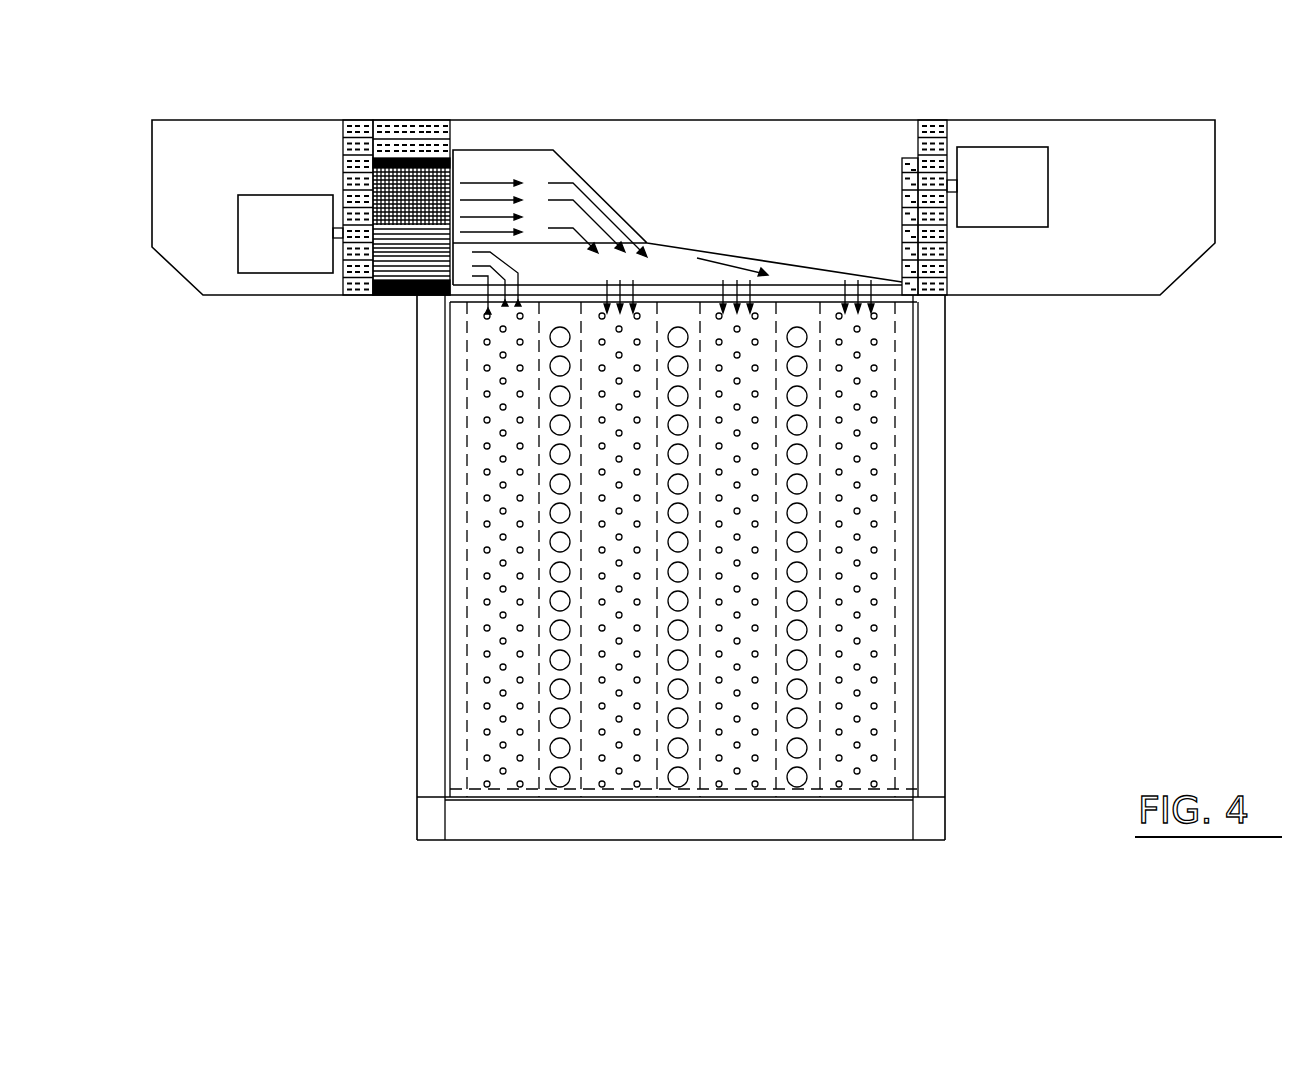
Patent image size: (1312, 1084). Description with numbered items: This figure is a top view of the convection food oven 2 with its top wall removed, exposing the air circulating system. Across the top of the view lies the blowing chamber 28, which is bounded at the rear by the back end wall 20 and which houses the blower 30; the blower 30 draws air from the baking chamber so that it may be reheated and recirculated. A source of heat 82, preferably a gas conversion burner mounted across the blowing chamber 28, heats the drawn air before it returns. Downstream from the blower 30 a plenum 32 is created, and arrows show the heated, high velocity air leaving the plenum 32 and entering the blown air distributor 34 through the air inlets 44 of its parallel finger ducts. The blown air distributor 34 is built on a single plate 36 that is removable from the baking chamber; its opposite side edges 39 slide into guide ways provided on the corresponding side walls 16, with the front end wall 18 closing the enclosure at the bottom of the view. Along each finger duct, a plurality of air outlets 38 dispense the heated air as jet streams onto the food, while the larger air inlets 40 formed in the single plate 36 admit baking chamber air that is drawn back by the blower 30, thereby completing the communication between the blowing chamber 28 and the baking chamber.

The convection food oven 2 is at (249, 586).
The side walls 16 is at (426, 503).
The front end wall 18 is at (507, 833).
The back end wall 20 is at (455, 300).
The blowing chamber 28 is at (816, 169).
The blower 30 is at (410, 165).
The plenum 32 is at (537, 160).
The blown air distributor 34 is at (633, 484).
The single plate 36 is at (875, 528).
The air outlets 38 is at (485, 603).
The side edges 39 is at (445, 556).
The air inlets 40 is at (555, 690).
The air inlet 44 is at (530, 308).
The source of heat 82 is at (1010, 160).